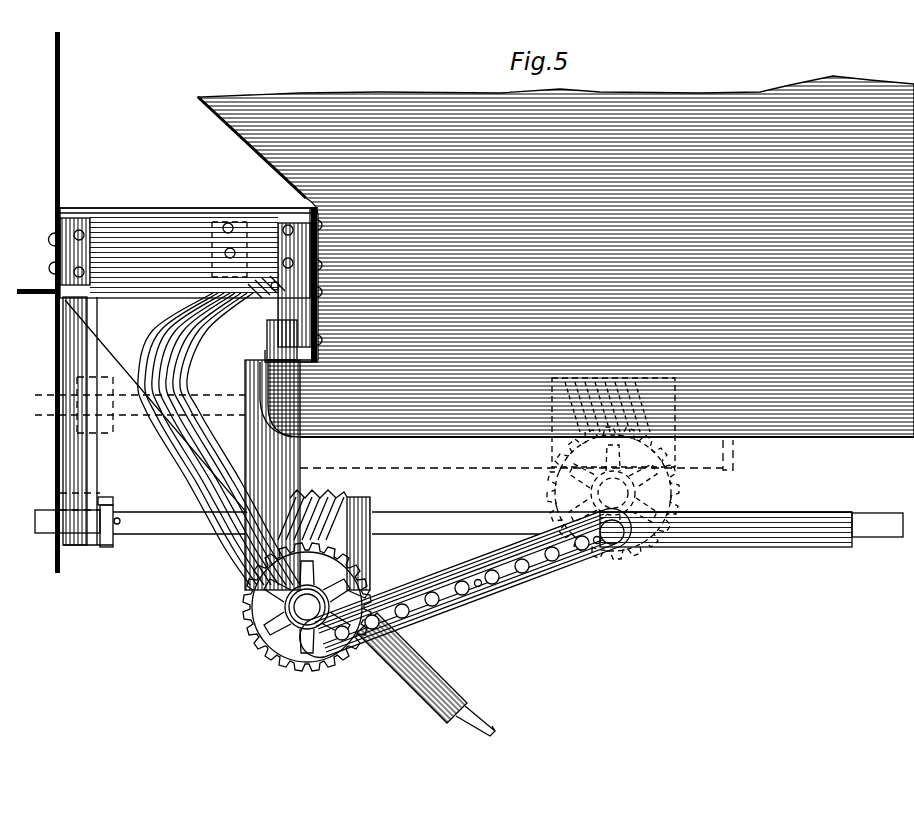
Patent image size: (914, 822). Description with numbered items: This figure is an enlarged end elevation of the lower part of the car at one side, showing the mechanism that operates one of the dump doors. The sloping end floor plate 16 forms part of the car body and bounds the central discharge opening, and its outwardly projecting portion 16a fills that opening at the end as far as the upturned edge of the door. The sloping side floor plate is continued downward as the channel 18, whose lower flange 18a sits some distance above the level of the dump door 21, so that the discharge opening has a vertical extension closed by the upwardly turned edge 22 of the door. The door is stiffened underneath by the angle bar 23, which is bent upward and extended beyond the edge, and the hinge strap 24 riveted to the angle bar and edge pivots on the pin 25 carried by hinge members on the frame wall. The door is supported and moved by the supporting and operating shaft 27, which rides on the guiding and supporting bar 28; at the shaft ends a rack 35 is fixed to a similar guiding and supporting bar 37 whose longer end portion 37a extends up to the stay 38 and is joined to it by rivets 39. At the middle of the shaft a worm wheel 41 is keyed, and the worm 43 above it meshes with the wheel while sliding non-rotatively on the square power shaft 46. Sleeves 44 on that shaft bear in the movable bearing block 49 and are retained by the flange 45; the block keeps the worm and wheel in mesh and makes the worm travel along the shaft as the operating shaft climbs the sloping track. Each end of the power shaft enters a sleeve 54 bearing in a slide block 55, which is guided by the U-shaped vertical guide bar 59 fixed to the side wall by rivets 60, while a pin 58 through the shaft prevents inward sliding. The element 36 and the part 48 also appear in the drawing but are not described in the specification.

The sloping end floor plate 16 is at (556, 256).
The outwardly projecting portion 16a is at (300, 383).
The channel 18 is at (316, 284).
The lower flange 18a is at (298, 363).
The dump door 21 is at (437, 661).
The upwardly turned edge 22 is at (177, 337).
The angle bar 23 is at (167, 338).
The hinge strap 24 is at (236, 220).
The pin 25 is at (318, 258).
The supporting and operating shaft 27 is at (305, 609).
The guiding and supporting bar 28 is at (734, 549).
The rack 35 is at (503, 577).
The pin hole 36 is at (547, 565).
The guiding and supporting bar 37 is at (703, 537).
The end portion 37a is at (215, 483).
The stay 38 is at (133, 225).
The rivet 39 is at (218, 212).
The worm wheel 41 is at (297, 673).
The worm 43 is at (345, 500).
The sleeve 44 is at (373, 495).
The flange 45 is at (364, 497).
The power shaft 46 is at (152, 527).
The bracket 48 is at (372, 549).
The movable bearing block 49 is at (390, 483).
The sleeve 54 is at (113, 500).
The slide block 55 is at (100, 498).
The pin 58 is at (122, 542).
The vertical guide bar 59 is at (82, 448).
The rivet 60 is at (53, 268).